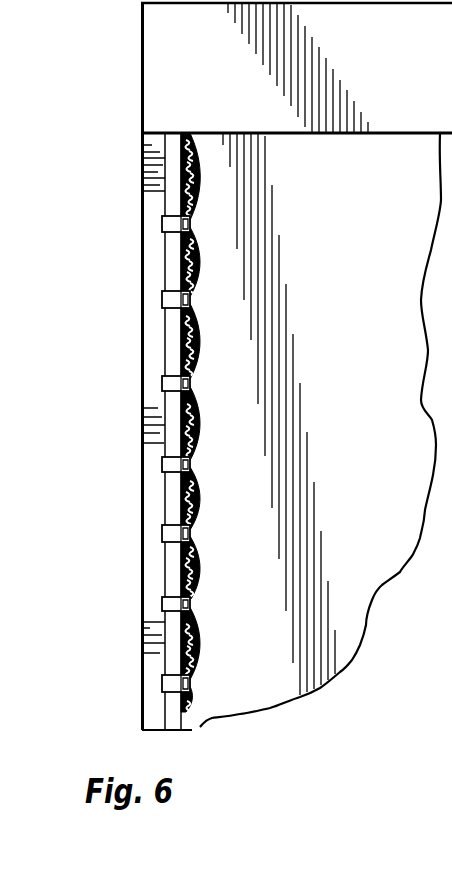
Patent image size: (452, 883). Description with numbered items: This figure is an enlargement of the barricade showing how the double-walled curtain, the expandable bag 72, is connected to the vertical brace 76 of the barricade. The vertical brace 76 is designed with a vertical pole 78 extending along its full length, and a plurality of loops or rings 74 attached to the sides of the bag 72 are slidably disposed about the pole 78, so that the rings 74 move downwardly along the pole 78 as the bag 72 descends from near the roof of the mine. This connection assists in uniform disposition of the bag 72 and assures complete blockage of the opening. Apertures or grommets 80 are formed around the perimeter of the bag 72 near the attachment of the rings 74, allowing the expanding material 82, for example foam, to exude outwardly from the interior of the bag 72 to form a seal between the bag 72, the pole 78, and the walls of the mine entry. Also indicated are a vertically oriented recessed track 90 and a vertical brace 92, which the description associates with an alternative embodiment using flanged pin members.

The expandable bag 72 is at (396, 449).
The loops or rings 74 is at (162, 383).
The vertical brace 76 is at (143, 147).
The vertical pole 78 is at (165, 262).
The apertures or grommets 80 is at (197, 172).
The expanding material 82 is at (197, 320).
The recessed track 90 is at (451, 780).
The vertical brace 92 is at (451, 696).